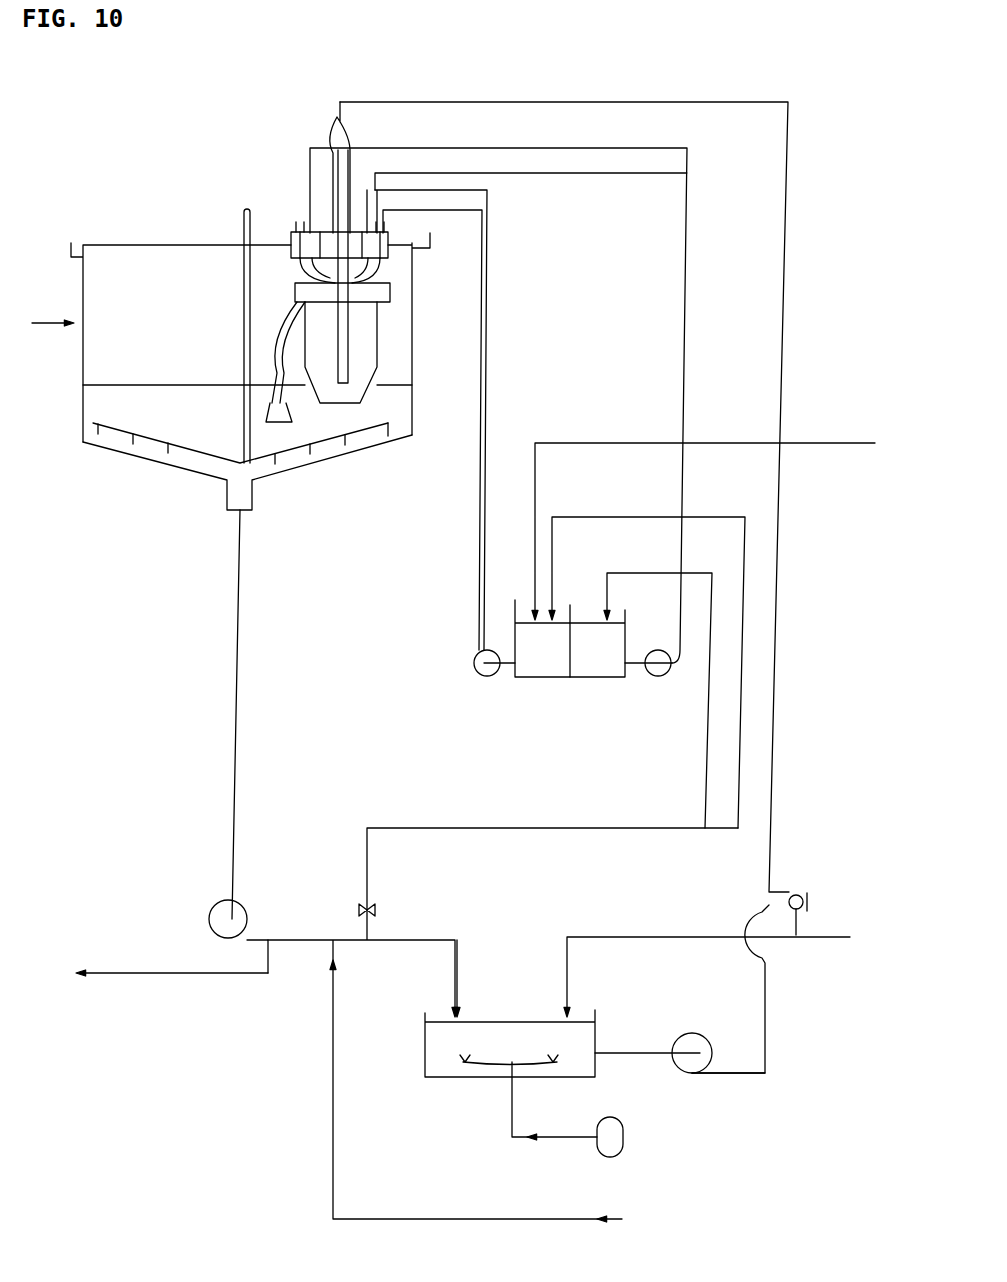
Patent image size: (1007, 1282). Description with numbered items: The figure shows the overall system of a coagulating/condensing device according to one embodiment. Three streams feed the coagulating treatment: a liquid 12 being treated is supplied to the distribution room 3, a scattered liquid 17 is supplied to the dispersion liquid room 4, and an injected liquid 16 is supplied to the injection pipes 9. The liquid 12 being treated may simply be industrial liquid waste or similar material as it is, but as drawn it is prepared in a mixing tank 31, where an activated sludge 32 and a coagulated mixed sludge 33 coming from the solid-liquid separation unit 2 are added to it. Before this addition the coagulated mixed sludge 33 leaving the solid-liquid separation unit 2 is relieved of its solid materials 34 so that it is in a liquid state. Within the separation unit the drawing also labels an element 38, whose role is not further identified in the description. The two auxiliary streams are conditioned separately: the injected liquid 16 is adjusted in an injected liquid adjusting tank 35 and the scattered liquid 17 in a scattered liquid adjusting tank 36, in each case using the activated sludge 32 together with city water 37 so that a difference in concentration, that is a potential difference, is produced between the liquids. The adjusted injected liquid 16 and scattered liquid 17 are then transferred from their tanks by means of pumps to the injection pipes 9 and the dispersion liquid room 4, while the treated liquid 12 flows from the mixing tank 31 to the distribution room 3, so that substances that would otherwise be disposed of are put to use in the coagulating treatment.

The solid-liquid separation unit 2 is at (37, 326).
The distribution room 3 is at (337, 117).
The dispersion liquid room 4 is at (388, 231).
The injection pipes 9 is at (305, 222).
The liquid being treated 12 is at (485, 102).
The injected liquid 16 is at (605, 195).
The scattered liquid 17 is at (490, 318).
The mixing tank 31 is at (425, 1040).
The activated sludge 32 is at (420, 937).
The coagulated mixed sludge 33 is at (298, 978).
The solid materials 34 is at (197, 977).
The injected liquid adjusting tank 35 is at (610, 660).
The scattered liquid adjusting tank 36 is at (542, 660).
The city water 37 is at (810, 443).
The flocculation unit 38 is at (365, 283).